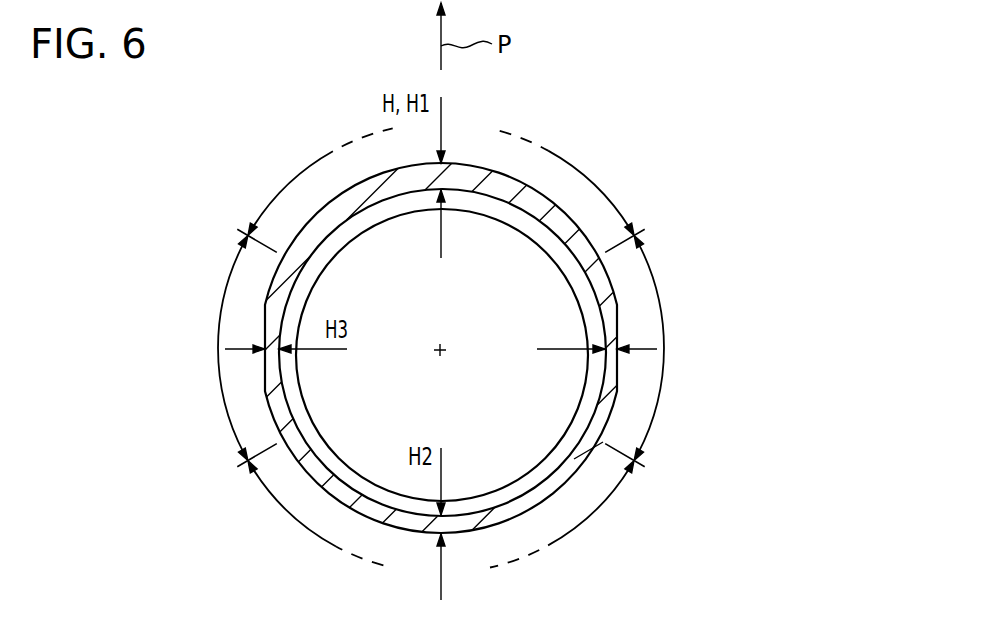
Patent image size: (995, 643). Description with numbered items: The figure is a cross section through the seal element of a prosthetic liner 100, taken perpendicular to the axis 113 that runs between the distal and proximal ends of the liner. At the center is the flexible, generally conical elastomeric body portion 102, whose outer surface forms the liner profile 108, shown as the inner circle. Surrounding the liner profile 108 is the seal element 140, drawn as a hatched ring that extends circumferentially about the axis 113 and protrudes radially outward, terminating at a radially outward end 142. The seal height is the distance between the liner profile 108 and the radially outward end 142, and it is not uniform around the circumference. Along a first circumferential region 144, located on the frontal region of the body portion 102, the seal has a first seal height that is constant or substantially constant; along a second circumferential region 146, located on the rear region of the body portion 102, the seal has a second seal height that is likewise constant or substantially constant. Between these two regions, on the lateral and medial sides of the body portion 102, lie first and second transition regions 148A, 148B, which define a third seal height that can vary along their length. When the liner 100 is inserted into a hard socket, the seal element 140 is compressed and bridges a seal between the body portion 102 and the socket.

The prosthetic liner 100 is at (702, 223).
The body portion 102 is at (533, 228).
The liner profile 108 is at (550, 472).
The axis 113 is at (435, 355).
The seal element 140 is at (580, 130).
The radially outward end 142 is at (464, 163).
The first circumferential region 144 is at (287, 186).
The second circumferential region 146 is at (290, 516).
The first transition region 148A is at (218, 342).
The second transition region 148B is at (660, 352).